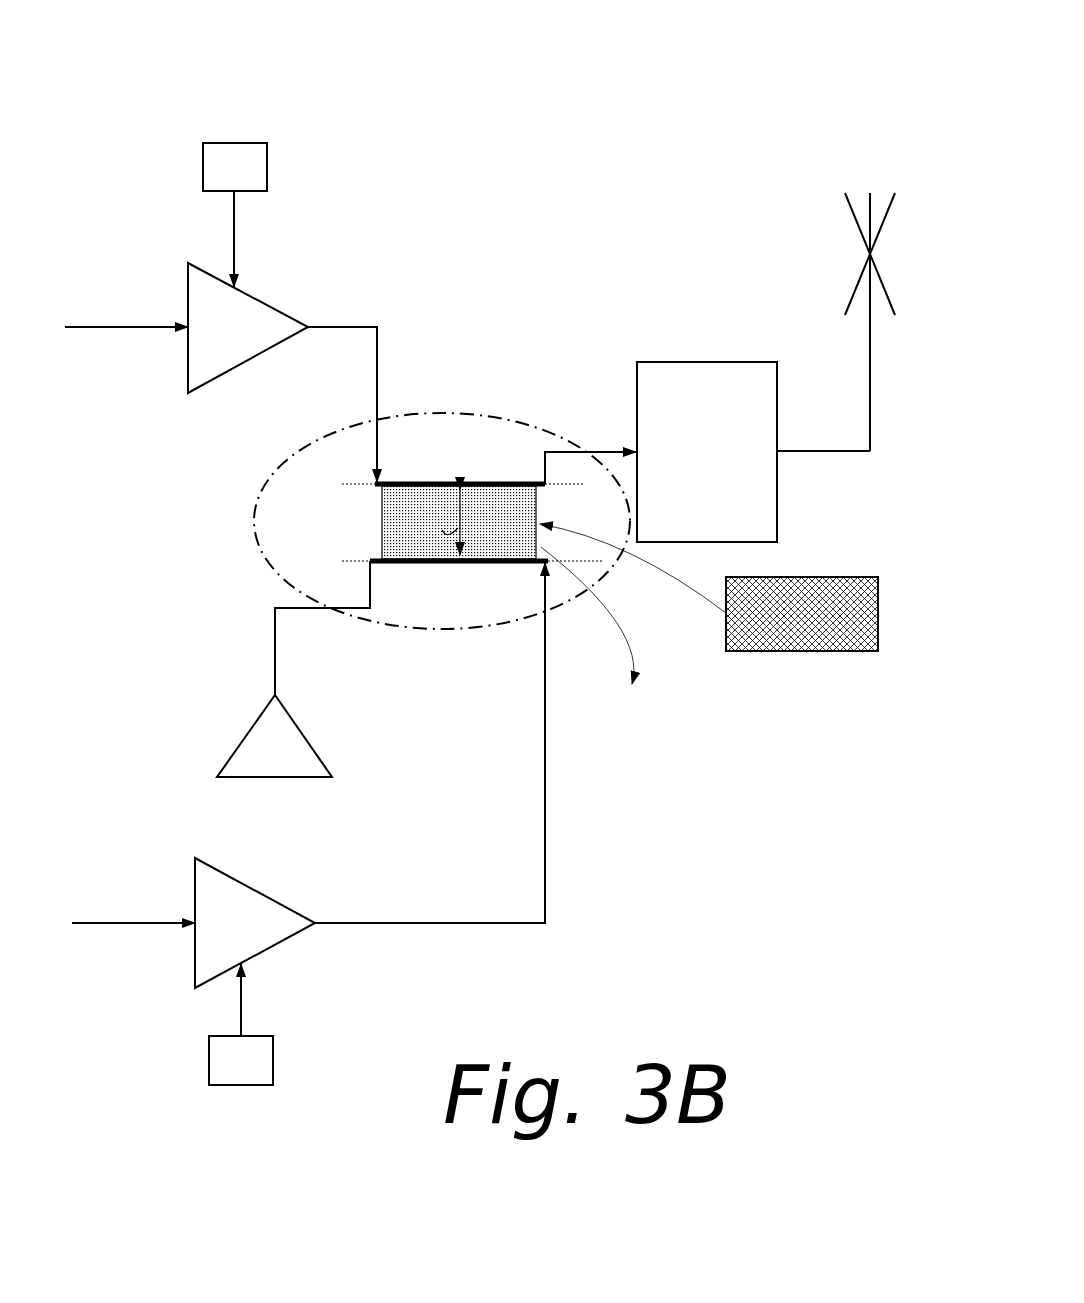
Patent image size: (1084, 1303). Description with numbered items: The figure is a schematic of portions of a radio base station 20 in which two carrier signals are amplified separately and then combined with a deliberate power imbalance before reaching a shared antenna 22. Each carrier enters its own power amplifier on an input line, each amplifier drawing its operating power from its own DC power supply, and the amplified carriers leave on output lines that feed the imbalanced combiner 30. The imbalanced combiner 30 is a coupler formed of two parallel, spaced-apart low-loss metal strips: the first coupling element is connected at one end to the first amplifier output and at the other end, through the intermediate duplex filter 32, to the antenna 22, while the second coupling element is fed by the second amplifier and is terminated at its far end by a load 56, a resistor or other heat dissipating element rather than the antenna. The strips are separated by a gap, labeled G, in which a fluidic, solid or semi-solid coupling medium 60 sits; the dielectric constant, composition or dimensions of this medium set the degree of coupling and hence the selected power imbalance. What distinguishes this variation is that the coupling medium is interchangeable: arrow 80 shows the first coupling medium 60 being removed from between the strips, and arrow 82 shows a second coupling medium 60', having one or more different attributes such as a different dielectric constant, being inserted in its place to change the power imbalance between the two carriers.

The radio base station 20 is at (558, 122).
The shared antenna 22 is at (887, 215).
The imbalanced combiner 30 is at (478, 398).
The duplex filter 32 is at (700, 362).
The load 56 is at (262, 778).
The first coupling medium 60 is at (459, 543).
The second coupling medium 60' is at (807, 635).
The removal arrow 80 is at (618, 613).
The insertion arrow 82 is at (682, 583).